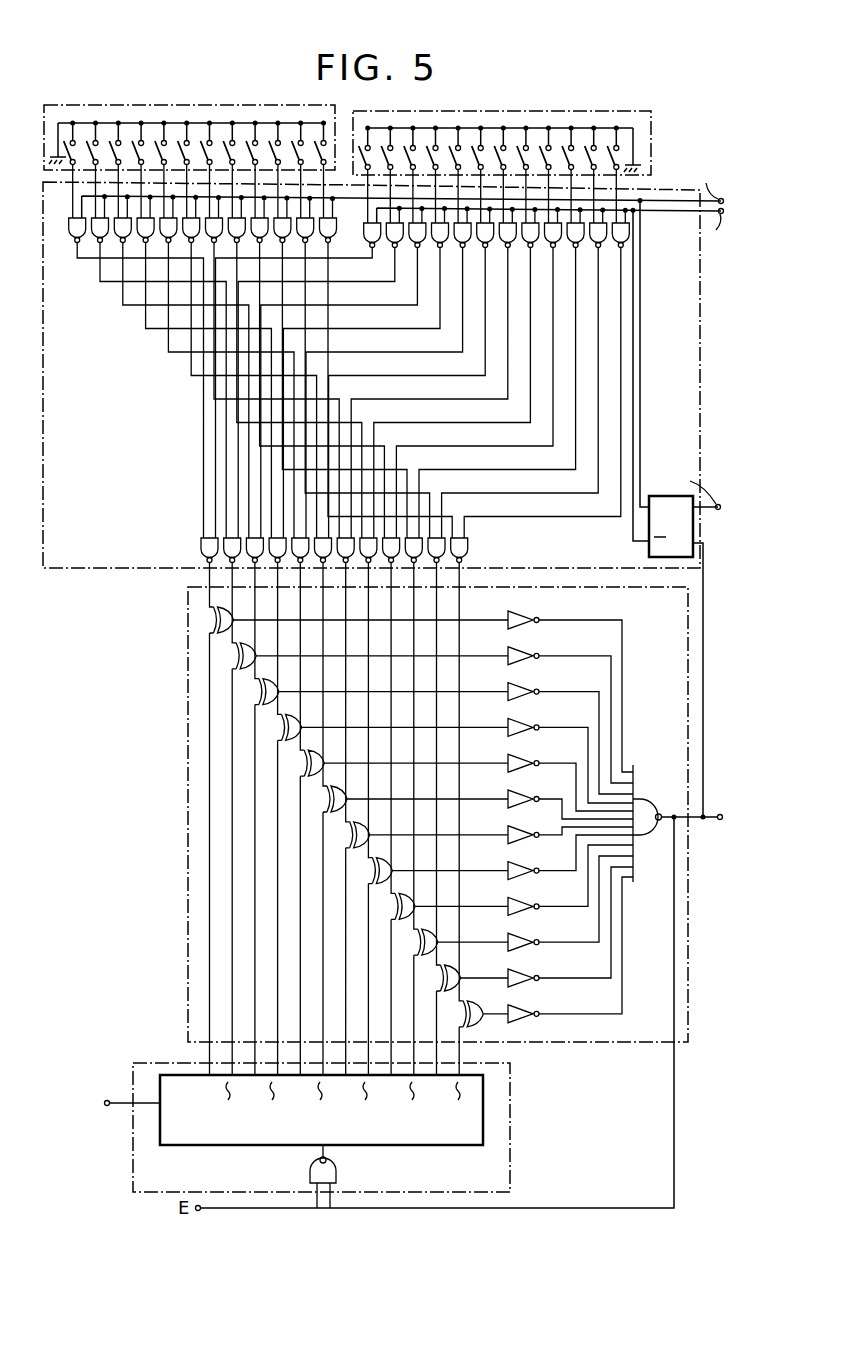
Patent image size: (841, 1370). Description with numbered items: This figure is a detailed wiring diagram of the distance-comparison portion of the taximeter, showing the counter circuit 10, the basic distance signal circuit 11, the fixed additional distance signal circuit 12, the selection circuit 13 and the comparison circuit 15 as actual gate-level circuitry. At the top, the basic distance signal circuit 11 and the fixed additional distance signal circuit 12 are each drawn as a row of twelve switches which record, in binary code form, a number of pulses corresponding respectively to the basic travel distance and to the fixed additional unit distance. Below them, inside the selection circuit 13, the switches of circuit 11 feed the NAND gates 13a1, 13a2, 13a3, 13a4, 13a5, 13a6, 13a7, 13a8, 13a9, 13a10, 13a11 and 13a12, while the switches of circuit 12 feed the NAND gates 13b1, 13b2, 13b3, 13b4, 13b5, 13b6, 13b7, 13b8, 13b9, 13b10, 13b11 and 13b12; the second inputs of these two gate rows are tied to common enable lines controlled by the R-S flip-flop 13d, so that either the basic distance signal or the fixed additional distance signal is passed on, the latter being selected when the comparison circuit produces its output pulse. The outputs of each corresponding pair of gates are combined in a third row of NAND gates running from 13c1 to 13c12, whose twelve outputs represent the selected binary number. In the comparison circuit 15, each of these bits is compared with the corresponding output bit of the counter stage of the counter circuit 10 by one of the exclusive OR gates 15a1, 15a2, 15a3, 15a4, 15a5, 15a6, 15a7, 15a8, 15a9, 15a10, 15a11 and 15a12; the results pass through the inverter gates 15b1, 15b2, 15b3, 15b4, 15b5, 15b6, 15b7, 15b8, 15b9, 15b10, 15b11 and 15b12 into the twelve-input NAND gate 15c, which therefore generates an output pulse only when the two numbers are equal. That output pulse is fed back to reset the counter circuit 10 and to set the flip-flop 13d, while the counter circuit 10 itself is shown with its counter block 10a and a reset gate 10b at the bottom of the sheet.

The counter circuit 10 is at (512, 1158).
The counter 10a is at (383, 1147).
The NAND gate 10b is at (310, 1177).
The basic distance signal circuit 11 is at (175, 107).
The fixed additional distance signal circuit 12 is at (540, 110).
The selection circuit 13 is at (655, 187).
The NAND gate 13a1 is at (75, 243).
The NAND gate 13a2 is at (99, 244).
The NAND gate 13a3 is at (122, 244).
The NAND gate 13a4 is at (145, 244).
The NAND gate 13a5 is at (168, 244).
The NAND gate 13a6 is at (191, 244).
The NAND gate 13a7 is at (214, 244).
The NAND gate 13a8 is at (237, 244).
The NAND gate 13a9 is at (260, 244).
The NAND gate 13a10 is at (282, 244).
The NAND gate 13a11 is at (305, 244).
The NAND gate 13a12 is at (329, 244).
The NAND gate 13b1 is at (373, 249).
The NAND gate 13b2 is at (395, 249).
The NAND gate 13b3 is at (418, 249).
The NAND gate 13b4 is at (440, 249).
The NAND gate 13b5 is at (463, 249).
The NAND gate 13b6 is at (486, 249).
The NAND gate 13b7 is at (508, 249).
The NAND gate 13b8 is at (531, 249).
The NAND gate 13b9 is at (553, 249).
The NAND gate 13b10 is at (576, 249).
The NAND gate 13b11 is at (599, 249).
The NAND gate 13b12 is at (622, 249).
The NAND gate 13c1 is at (201, 548).
The NAND gate 13c12 is at (468, 548).
The R-S flip-flop 13d is at (649, 552).
The comparison circuit 15 is at (188, 900).
The exclusive OR gate 15a1 is at (212, 620).
The exclusive OR gate 15a2 is at (235, 656).
The exclusive OR gate 15a3 is at (258, 692).
The exclusive OR gate 15a4 is at (281, 727).
The exclusive OR gate 15a5 is at (303, 763).
The exclusive OR gate 15a6 is at (326, 799).
The exclusive OR gate 15a7 is at (365, 828).
The exclusive OR gate 15a8 is at (388, 865).
The exclusive OR gate 15a9 is at (411, 900).
The exclusive OR gate 15a10 is at (433, 937).
The exclusive OR gate 15a11 is at (456, 972).
The exclusive OR gate 15a12 is at (480, 1022).
The inverter gate 15b1 is at (528, 613).
The inverter gate 15b2 is at (528, 649).
The inverter gate 15b3 is at (528, 685).
The inverter gate 15b4 is at (528, 721).
The inverter gate 15b5 is at (520, 757).
The inverter gate 15b6 is at (512, 792).
The inverter gate 15b7 is at (518, 827).
The inverter gate 15b8 is at (516, 863).
The inverter gate 15b9 is at (516, 899).
The inverter gate 15b10 is at (518, 935).
The inverter gate 15b11 is at (518, 971).
The inverter gate 15b12 is at (518, 1007).
The NAND gate 15c is at (645, 800).